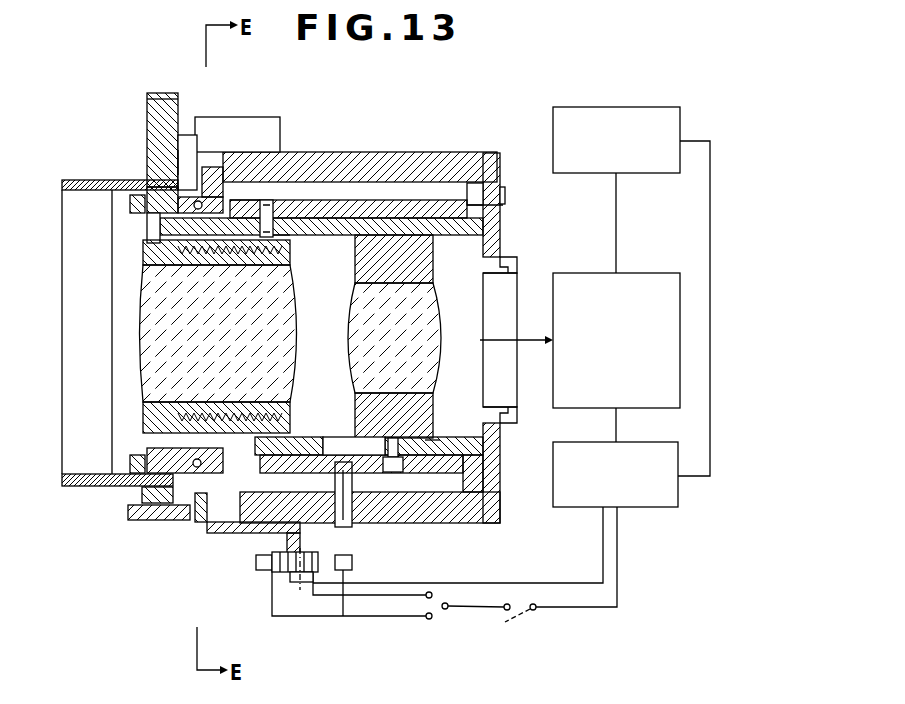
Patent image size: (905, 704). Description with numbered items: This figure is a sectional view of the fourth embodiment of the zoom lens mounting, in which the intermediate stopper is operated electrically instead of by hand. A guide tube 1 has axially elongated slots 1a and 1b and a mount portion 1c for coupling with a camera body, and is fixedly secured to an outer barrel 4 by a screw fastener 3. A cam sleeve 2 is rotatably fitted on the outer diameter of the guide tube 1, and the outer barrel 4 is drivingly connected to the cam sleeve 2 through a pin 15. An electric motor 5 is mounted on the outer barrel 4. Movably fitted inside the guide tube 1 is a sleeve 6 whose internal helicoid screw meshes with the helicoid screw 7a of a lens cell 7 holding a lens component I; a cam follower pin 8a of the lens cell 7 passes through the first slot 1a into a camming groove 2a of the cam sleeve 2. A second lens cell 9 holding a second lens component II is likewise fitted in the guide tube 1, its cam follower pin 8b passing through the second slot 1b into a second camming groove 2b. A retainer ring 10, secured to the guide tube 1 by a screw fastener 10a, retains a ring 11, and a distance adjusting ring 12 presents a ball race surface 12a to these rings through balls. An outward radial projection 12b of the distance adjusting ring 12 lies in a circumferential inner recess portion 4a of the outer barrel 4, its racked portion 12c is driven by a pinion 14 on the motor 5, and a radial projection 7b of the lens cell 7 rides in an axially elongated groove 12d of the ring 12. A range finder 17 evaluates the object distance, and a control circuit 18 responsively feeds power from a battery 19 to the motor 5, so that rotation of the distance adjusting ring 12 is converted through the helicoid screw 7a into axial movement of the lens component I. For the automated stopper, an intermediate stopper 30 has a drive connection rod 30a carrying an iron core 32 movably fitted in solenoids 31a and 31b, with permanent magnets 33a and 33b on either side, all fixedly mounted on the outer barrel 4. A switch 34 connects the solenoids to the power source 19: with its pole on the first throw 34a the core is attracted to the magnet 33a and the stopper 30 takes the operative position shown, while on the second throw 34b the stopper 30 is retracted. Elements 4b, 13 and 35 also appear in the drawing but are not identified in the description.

The guide tube 1 is at (422, 225).
The first slot 1a is at (270, 207).
The second slot 1b is at (398, 470).
The mount portion 1c is at (517, 257).
The cam sleeve 2 is at (395, 205).
The camming groove 2a is at (290, 207).
The second camming groove 2b is at (415, 450).
The screw fastener 3 is at (507, 205).
The outer barrel 4 is at (473, 165).
The circumferential inner recess portion 4a is at (223, 180).
The pin 4b is at (342, 530).
The electric motor 5 is at (257, 132).
The sleeve 6 is at (177, 418).
The lens cell 7 is at (193, 407).
The helicoid screw 7a is at (190, 397).
The radial projection 7b is at (128, 200).
The cam follower pin 8a is at (297, 210).
The cam follower pin 8b is at (437, 447).
The lens cell 9 is at (418, 417).
The retainer ring 10 is at (158, 495).
The screw fastener 10a is at (163, 445).
The ring 11 is at (233, 533).
The distance adjusting ring 12 is at (80, 180).
The ball race surface 12a is at (170, 197).
The radial projection 12b is at (197, 160).
The racked portion 12c is at (160, 162).
The axially elongated groove 12d is at (75, 195).
The washer 13 is at (147, 220).
The pinion 14 is at (162, 93).
The pin 15 is at (375, 472).
The range finder 17 is at (650, 273).
The control circuit 18 is at (650, 107).
The battery 19 is at (642, 508).
The intermediate stopper 30 is at (190, 525).
The drive connection rod 30a is at (201, 525).
The solenoid 31a is at (272, 572).
The solenoid 31b is at (303, 582).
The iron core 32 is at (292, 576).
The permanent magnet 33a is at (258, 565).
The permanent magnet 33b is at (344, 572).
The switch 34 is at (447, 609).
The first throw 34a is at (427, 598).
The second throw 34b is at (429, 619).
The switch blade 35 is at (523, 620).
The lens component I is at (137, 322).
The second lens component II is at (440, 330).